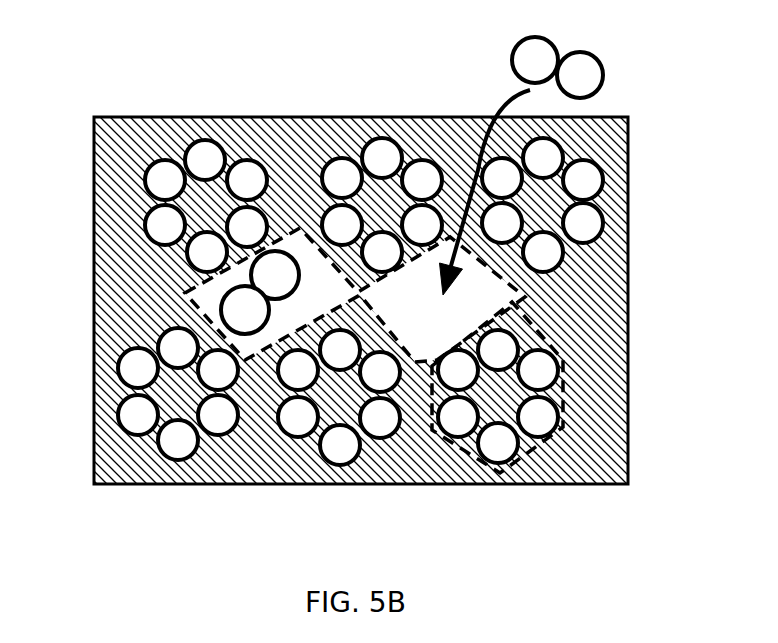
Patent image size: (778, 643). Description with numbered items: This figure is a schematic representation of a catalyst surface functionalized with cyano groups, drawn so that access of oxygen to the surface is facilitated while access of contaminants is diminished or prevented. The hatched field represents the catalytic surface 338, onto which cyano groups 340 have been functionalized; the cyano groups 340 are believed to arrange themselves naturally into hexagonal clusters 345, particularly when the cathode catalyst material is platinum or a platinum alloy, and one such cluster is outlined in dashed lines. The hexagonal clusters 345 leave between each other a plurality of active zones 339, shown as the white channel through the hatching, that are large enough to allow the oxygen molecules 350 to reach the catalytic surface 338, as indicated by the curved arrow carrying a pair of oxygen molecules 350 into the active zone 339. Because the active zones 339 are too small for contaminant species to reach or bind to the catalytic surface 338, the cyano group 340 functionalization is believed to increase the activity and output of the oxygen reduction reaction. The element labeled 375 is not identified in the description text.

The catalytic surface 338 is at (597, 326).
The active zones 339 is at (437, 330).
The cyano groups 340 is at (583, 180).
The hexagonal clusters 345 is at (563, 398).
The oxygen molecules 350 is at (592, 50).
The pore 375 is at (203, 153).